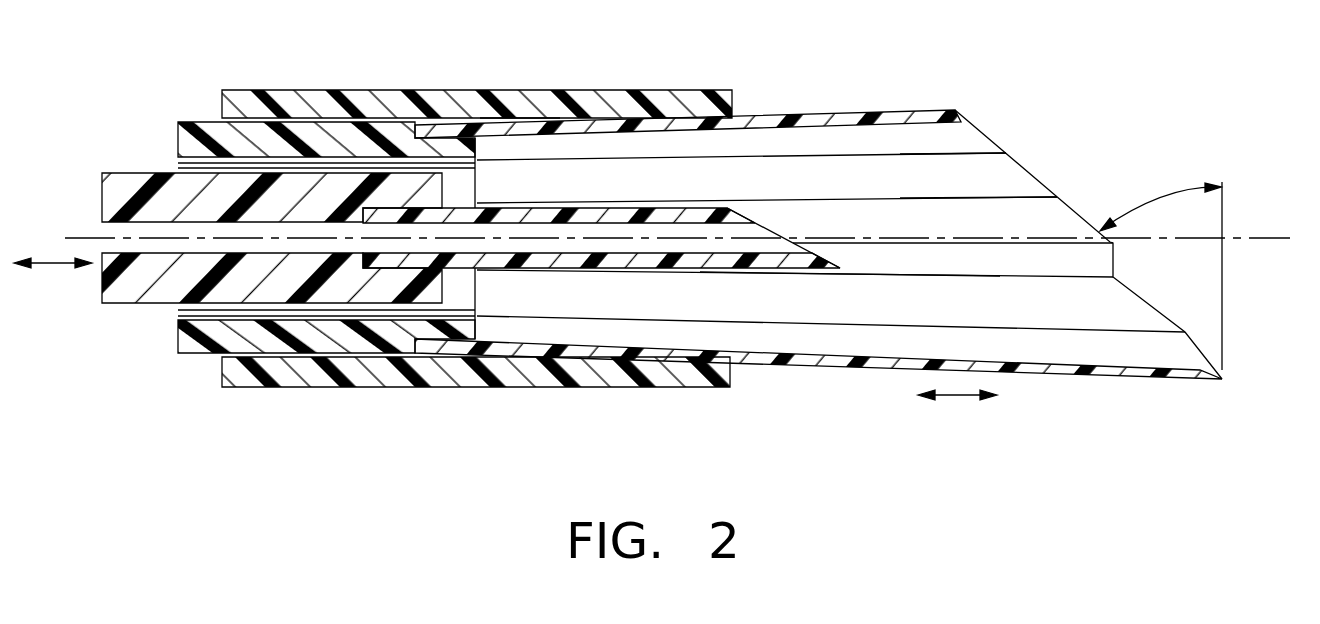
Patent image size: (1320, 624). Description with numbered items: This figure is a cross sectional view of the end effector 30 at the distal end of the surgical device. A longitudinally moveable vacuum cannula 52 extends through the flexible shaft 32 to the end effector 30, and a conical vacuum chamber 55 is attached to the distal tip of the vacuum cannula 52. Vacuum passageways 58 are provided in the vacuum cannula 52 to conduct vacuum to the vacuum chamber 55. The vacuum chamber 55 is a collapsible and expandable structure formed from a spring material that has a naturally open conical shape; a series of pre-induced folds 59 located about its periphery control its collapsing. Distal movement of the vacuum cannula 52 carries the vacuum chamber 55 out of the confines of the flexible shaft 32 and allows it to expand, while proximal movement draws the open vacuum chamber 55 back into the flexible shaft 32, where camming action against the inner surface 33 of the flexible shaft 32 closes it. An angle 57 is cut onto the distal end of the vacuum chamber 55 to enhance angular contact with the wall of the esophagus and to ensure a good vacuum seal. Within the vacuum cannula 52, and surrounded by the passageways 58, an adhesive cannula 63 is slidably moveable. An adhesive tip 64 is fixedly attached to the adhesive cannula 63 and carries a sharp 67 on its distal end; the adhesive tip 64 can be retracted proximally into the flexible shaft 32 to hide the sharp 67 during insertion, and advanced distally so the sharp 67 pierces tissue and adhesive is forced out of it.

The end effector 30 is at (1246, 275).
The flexible shaft 32 is at (583, 93).
The inner surface 33 is at (497, 118).
The vacuum cannula 52 is at (205, 127).
The vacuum chamber 55 is at (853, 111).
The angle 57 is at (1158, 195).
The vacuum passageways 58 is at (187, 164).
The pre-induced folds 59 is at (961, 154).
The adhesive cannula 63 is at (139, 304).
The adhesive tip 64 is at (793, 272).
The sharp 67 is at (768, 225).